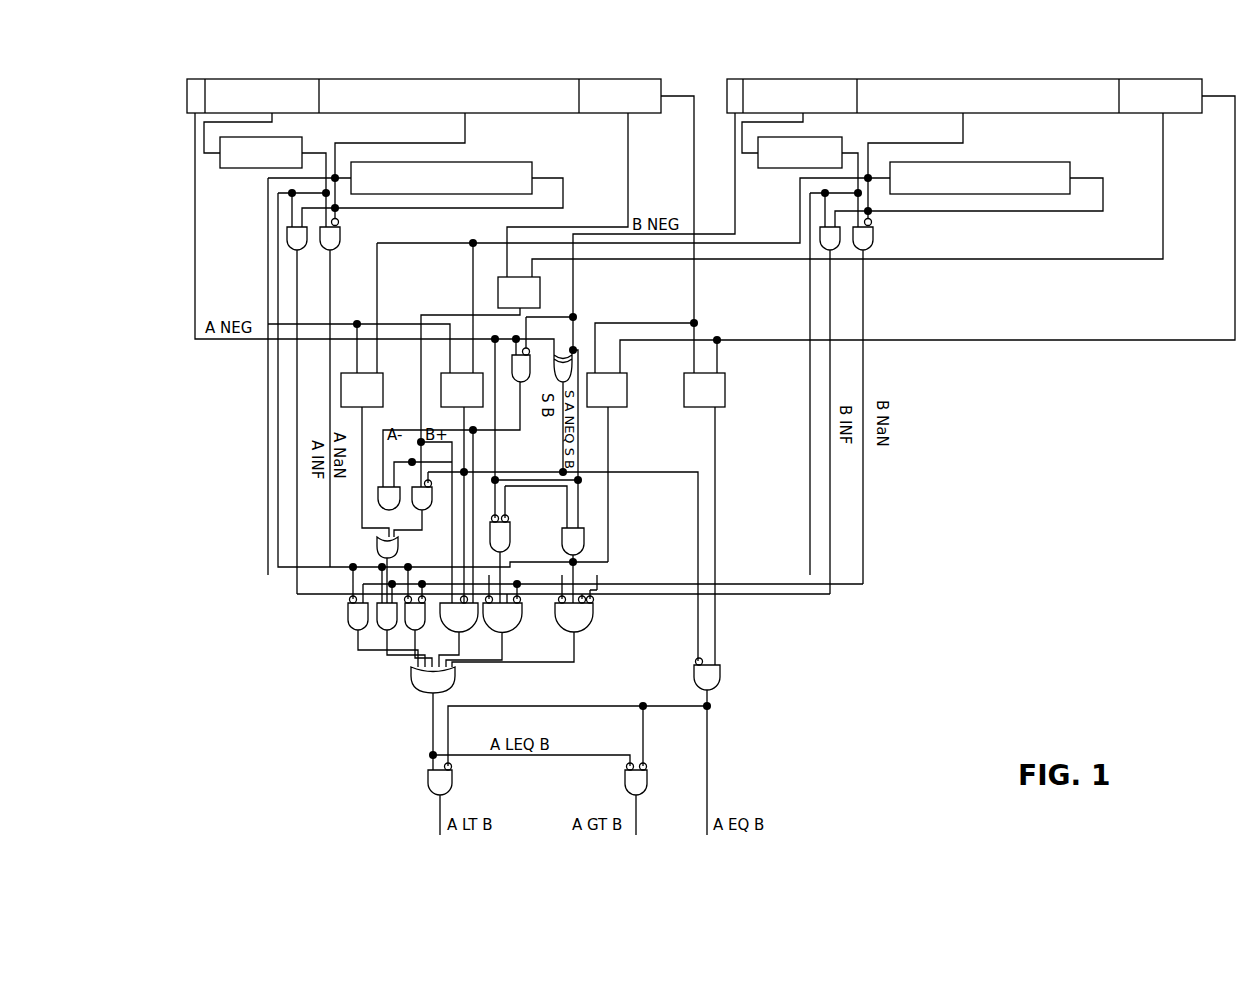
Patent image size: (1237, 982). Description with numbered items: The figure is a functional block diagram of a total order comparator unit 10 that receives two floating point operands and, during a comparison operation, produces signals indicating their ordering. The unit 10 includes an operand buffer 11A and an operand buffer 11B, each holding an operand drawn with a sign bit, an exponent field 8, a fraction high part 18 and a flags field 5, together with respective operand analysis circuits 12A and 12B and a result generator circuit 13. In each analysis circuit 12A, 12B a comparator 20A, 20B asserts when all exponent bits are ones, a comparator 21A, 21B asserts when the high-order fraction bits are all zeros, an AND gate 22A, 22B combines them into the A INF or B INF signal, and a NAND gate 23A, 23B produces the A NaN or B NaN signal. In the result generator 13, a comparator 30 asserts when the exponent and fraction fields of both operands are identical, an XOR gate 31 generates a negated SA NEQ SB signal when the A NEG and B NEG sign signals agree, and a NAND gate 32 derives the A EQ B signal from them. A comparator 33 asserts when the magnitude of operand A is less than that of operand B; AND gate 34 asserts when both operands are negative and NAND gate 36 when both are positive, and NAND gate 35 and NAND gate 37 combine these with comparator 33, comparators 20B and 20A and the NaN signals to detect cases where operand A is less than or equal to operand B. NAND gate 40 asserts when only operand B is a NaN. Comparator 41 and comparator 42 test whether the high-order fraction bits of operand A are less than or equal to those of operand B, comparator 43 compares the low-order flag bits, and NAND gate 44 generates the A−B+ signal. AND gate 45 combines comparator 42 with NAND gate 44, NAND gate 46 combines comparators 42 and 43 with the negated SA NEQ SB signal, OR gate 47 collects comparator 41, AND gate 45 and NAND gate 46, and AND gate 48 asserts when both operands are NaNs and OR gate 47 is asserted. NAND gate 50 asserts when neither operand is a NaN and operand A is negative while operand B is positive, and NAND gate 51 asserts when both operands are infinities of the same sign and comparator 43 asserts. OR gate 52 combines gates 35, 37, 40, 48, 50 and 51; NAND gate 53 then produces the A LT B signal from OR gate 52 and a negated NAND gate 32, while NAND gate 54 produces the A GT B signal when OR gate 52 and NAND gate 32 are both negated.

The total order comparator unit 10 is at (981, 466).
The operand buffer 11A is at (424, 83).
The operand buffer 11B is at (964, 83).
The operand analysis circuit 12A is at (258, 367).
The operand analysis circuit 12B is at (1073, 370).
The result generator circuit 13 is at (246, 481).
The five-bit flags field 5 is at (611, 254).
The eight-bit exponent field 8 is at (811, 125).
The eighteen-bit fraction high part 18 is at (475, 352).
The XOR gate 31 is at (574, 349).
The comparator 20A is at (260, 170).
The comparator 20B is at (795, 170).
The comparator 21A is at (410, 167).
The comparator 21B is at (973, 167).
The AND gate 22A is at (307, 248).
The AND gate 22B is at (842, 248).
The NAND gate 23A is at (338, 246).
The NAND gate 23B is at (873, 246).
The comparator 30 is at (725, 392).
The NAND gate 32 is at (720, 683).
The comparator 33 is at (627, 392).
The AND gate 34 is at (584, 548).
The NAND gate 35 is at (594, 620).
The NAND gate 36 is at (512, 548).
The NAND gate 37 is at (518, 634).
The NAND gate 40 is at (348, 622).
The comparator 41 is at (360, 408).
The comparator 42 is at (464, 408).
The comparator 43 is at (498, 291).
The NAND gate 44 is at (511, 353).
The AND gate 45 is at (378, 500).
The NAND gate 46 is at (428, 512).
The OR gate 47 is at (377, 553).
The AND gate 48 is at (382, 632).
The NAND gate 50 is at (410, 632).
The NAND gate 51 is at (467, 634).
The OR gate 52 is at (414, 682).
The NAND gate 53 is at (452, 786).
The NAND gate 54 is at (647, 786).